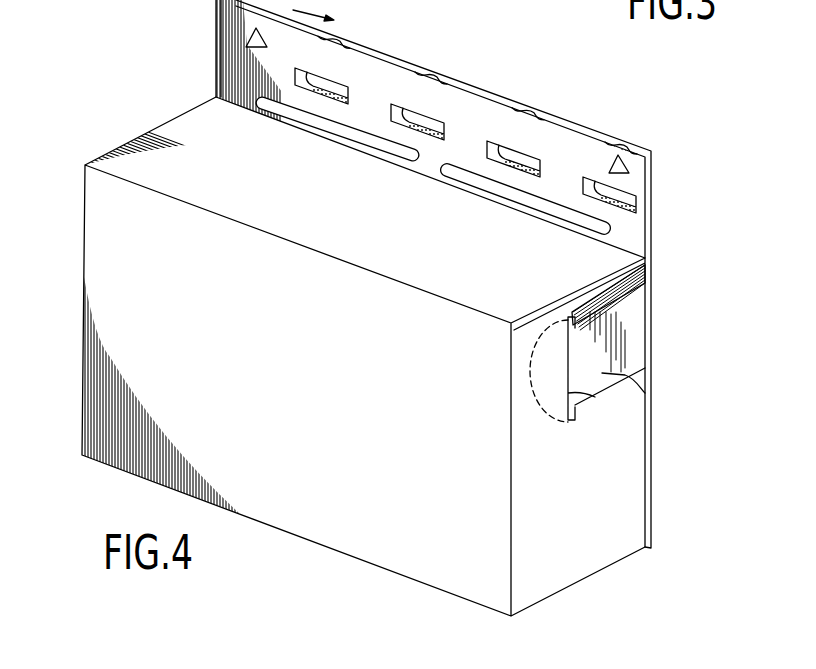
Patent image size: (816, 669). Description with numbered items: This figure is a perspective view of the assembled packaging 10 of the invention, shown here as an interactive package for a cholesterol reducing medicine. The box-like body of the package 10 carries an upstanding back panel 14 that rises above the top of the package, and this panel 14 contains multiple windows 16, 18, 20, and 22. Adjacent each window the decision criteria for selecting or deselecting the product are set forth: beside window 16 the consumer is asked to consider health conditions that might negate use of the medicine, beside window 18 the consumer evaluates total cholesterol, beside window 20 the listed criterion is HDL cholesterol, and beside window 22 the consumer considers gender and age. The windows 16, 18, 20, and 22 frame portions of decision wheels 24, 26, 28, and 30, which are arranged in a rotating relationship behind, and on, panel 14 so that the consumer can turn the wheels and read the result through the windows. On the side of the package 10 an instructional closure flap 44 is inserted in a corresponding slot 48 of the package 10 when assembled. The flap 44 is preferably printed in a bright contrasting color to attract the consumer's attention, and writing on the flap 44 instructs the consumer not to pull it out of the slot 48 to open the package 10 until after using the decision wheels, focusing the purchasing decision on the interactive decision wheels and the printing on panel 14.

The packaging 10 is at (146, 108).
The upstanding back panel 14 is at (240, 58).
The window 16 is at (333, 83).
The window 18 is at (430, 118).
The window 20 is at (525, 155).
The window 22 is at (622, 190).
The decision wheel 24 is at (323, 32).
The decision wheel 26 is at (418, 66).
The decision wheel 28 is at (527, 102).
The decision wheel 30 is at (620, 138).
The instructional closure flap 44 is at (645, 393).
The slot 48 is at (595, 397).